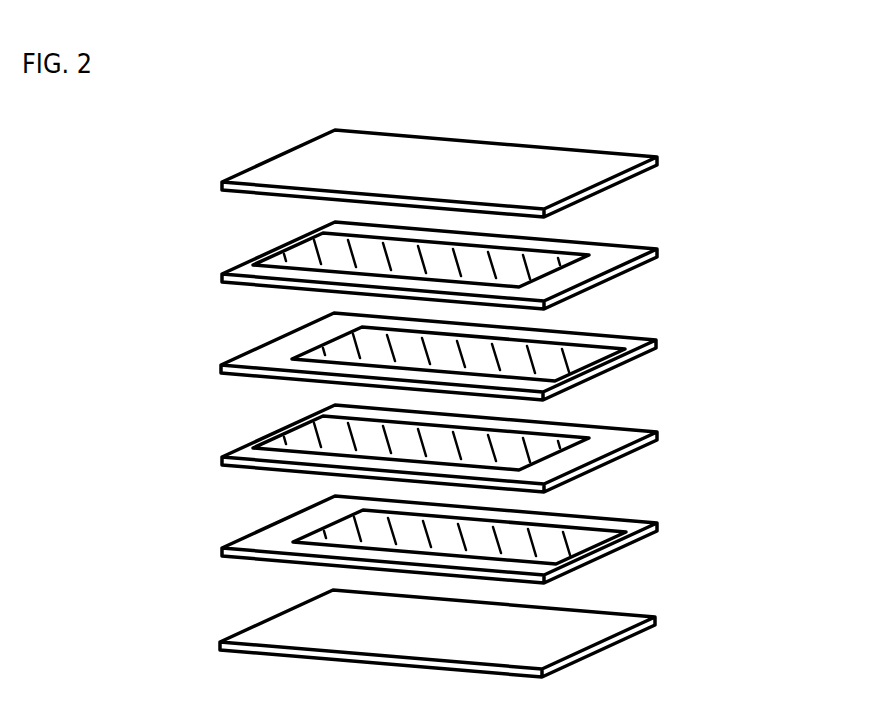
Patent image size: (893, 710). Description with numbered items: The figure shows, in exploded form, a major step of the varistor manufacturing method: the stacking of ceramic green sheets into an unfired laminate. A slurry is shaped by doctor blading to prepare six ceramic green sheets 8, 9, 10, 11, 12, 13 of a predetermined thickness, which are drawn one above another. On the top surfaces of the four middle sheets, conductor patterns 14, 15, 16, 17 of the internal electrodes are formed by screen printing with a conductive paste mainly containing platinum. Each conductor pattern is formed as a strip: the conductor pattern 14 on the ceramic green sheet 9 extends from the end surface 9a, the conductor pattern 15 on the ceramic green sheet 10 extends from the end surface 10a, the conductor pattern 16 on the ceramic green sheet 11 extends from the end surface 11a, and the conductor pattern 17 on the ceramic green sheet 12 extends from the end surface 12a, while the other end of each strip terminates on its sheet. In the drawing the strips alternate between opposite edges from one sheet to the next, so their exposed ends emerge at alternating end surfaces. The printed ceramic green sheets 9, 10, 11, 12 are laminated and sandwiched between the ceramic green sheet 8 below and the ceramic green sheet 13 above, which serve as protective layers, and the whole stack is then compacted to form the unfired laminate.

The ceramic green sheet 8 is at (623, 638).
The ceramic green sheet 9 is at (620, 517).
The end surface 9a is at (613, 547).
The ceramic green sheet 10 is at (658, 432).
The end surface 10a is at (287, 446).
The ceramic green sheet 11 is at (658, 340).
The end surface 11a is at (605, 372).
The ceramic green sheet 12 is at (650, 247).
The end surface 12a is at (292, 262).
The ceramic green sheet 13 is at (650, 153).
The conductor pattern 14 is at (307, 533).
The conductor pattern 15 is at (285, 468).
The conductor pattern 16 is at (307, 352).
The conductor pattern 17 is at (293, 272).